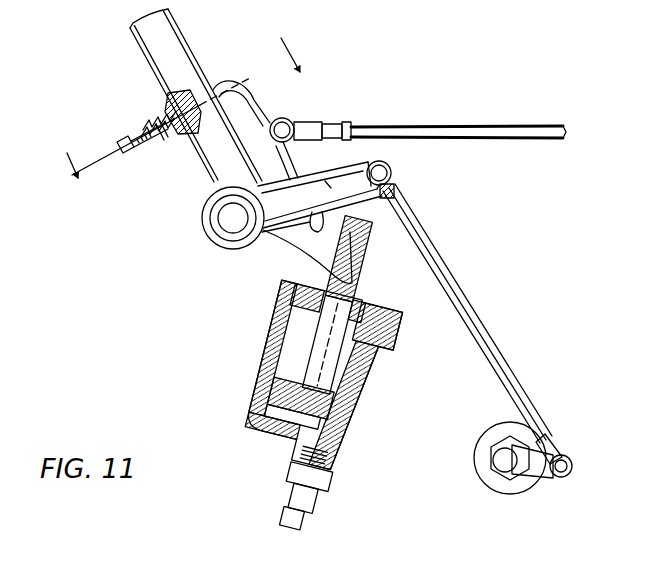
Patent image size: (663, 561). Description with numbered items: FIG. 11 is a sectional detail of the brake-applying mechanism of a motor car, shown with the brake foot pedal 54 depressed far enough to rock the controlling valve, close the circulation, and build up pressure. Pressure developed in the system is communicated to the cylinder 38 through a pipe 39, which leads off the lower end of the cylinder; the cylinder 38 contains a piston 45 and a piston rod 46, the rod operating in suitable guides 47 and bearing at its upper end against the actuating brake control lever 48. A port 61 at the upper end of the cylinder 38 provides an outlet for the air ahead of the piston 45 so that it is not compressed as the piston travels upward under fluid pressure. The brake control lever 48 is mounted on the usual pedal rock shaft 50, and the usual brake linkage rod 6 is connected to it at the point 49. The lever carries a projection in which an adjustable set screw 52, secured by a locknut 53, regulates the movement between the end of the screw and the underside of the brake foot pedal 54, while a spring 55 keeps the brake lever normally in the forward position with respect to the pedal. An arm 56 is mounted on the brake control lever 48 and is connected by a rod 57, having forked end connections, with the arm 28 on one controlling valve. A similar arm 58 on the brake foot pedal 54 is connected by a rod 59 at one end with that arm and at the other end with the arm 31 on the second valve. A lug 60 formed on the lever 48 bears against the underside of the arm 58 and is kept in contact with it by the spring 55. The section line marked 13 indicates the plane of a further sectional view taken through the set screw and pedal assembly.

The brake control rod 6 is at (438, 126).
The section line 13 is at (172, 109).
The arm 28 is at (547, 478).
The arm 31 is at (532, 465).
The cylinder 38 is at (243, 408).
The pipe 39 is at (296, 528).
The piston 45 is at (317, 388).
The piston rod 46 is at (323, 335).
The guides 47 is at (353, 288).
The brake control lever 48 is at (247, 117).
The point 49 is at (284, 129).
The pedal rock shaft 50 is at (233, 218).
The set screw 52 is at (140, 133).
The locknut 53 is at (147, 123).
The brake foot pedal 54 is at (175, 63).
The spring 55 is at (174, 134).
The arm 56 is at (394, 191).
The rod 57 is at (481, 352).
The arm 58 is at (338, 188).
The rod 59 is at (470, 318).
The lug 60 is at (310, 222).
The port 61 is at (393, 347).